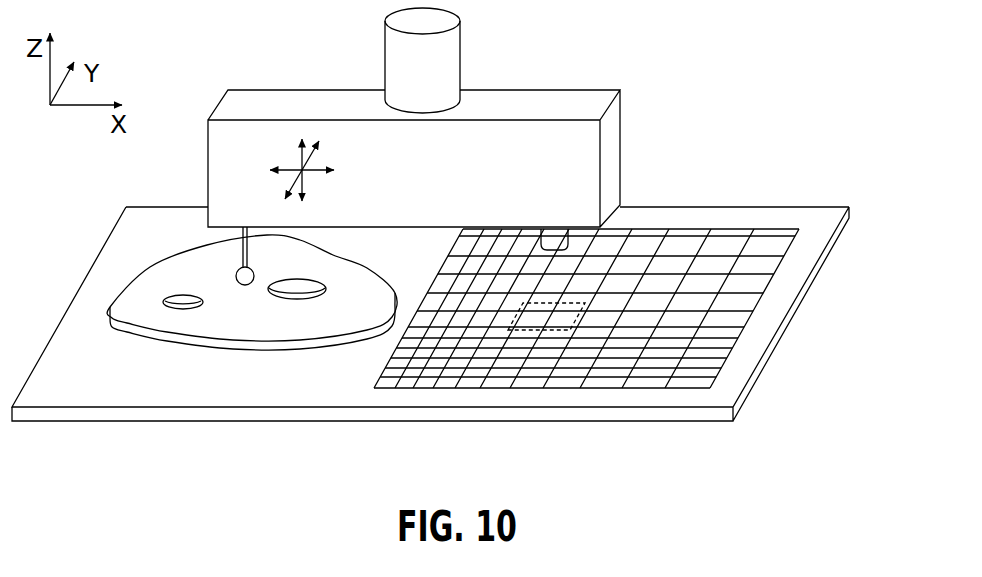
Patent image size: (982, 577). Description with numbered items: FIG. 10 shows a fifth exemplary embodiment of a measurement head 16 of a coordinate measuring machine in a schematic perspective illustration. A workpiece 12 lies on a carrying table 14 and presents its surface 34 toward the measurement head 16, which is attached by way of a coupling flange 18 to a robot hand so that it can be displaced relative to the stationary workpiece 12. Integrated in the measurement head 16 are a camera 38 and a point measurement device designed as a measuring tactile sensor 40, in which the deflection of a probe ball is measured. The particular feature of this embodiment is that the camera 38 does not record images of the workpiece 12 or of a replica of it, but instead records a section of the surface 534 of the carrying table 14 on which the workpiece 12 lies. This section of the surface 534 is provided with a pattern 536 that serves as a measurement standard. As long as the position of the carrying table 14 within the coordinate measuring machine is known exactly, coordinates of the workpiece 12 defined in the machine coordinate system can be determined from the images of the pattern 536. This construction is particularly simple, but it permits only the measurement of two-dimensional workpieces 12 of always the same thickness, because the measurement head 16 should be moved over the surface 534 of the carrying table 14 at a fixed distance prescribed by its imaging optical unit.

The workpiece 12 is at (208, 263).
The carrying table 14 is at (747, 393).
The measurement head 16 is at (247, 102).
The coupling flange 18 is at (450, 57).
The surface 34 is at (152, 272).
The camera 38 is at (540, 241).
The measuring tactile sensor 40 is at (219, 267).
The surface of the carrying table 534 is at (593, 266).
The pattern 536 is at (778, 230).